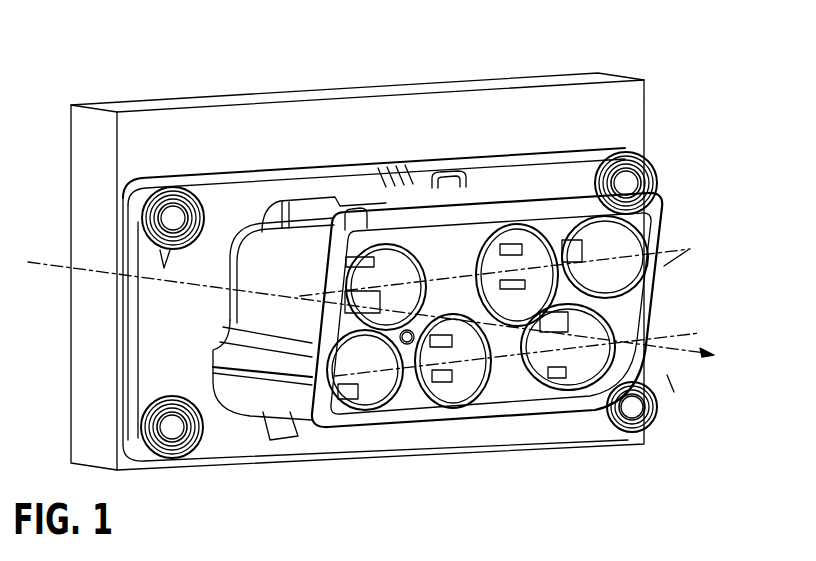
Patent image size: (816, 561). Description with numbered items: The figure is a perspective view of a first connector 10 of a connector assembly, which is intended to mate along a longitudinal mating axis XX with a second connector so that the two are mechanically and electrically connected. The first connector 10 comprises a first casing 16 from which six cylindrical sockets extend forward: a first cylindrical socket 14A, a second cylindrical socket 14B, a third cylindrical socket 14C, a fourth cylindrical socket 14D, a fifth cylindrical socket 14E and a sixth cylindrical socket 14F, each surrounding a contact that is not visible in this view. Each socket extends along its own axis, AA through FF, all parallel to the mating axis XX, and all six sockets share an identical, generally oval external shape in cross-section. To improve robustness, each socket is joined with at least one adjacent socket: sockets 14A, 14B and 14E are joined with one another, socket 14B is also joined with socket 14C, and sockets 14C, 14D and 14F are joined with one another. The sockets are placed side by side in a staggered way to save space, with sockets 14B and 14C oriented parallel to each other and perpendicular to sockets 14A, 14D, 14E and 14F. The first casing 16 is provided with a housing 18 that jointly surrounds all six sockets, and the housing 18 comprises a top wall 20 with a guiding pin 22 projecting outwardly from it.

The first connector 10 is at (88, 55).
The first casing 16 is at (205, 108).
The housing 18 is at (257, 392).
The top wall 20 is at (482, 195).
The guiding pin 22 is at (457, 176).
The first cylindrical socket 14A is at (405, 237).
The second cylindrical socket 14B is at (462, 398).
The third cylindrical socket 14C is at (450, 248).
The fourth cylindrical socket 14D is at (577, 367).
The fifth cylindrical socket 14E is at (372, 395).
The sixth cylindrical socket 14F is at (627, 244).